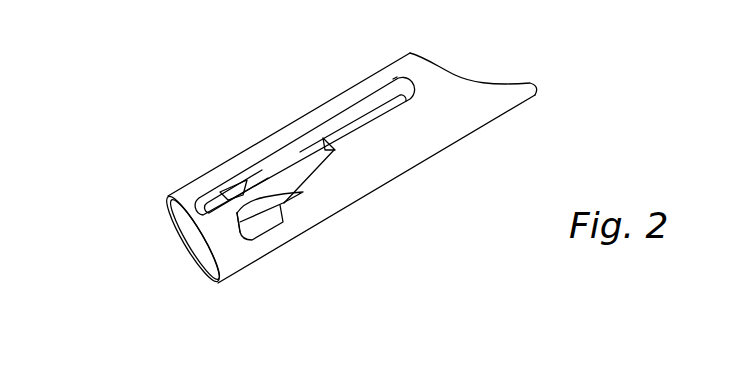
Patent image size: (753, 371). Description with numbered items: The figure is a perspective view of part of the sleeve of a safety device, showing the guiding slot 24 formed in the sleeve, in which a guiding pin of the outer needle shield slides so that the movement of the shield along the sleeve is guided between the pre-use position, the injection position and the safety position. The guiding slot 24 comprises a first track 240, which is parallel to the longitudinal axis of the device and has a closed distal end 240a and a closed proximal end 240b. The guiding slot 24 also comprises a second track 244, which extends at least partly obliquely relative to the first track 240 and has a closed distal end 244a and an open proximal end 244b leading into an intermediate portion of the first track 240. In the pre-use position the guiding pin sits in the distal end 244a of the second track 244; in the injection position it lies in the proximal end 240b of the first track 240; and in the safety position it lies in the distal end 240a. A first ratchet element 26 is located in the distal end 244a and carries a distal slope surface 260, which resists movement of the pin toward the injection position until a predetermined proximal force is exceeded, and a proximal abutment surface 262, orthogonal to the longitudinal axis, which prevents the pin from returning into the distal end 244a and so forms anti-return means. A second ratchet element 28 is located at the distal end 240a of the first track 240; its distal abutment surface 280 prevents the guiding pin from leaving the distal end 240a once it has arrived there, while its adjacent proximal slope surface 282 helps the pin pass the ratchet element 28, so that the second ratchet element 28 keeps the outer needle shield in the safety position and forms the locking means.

The guiding slot 24 is at (308, 180).
The first track 240 is at (323, 122).
The closed distal end of first track 240a is at (171, 209).
The closed proximal end of first track 240b is at (413, 89).
The second track 244 is at (305, 177).
The closed distal end of second track 244a is at (240, 233).
The open proximal end of second track 244b is at (331, 156).
The second ratchet element 28 is at (181, 144).
The distal abutment surface 280 is at (197, 196).
The proximal slope surface 282 is at (243, 186).
The first ratchet element 26 is at (334, 263).
The distal slope surface 260 is at (257, 218).
The proximal abutment surface 262 is at (292, 198).